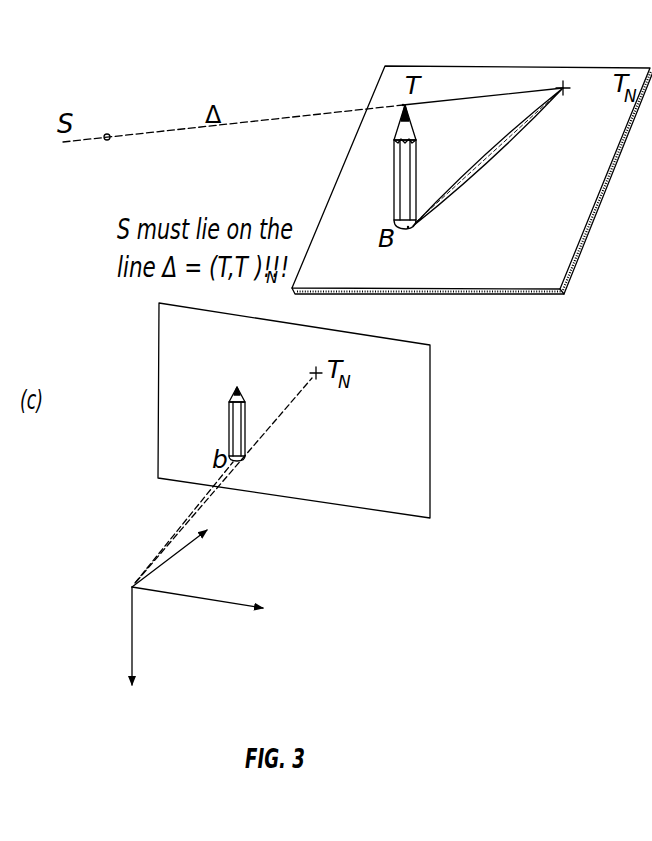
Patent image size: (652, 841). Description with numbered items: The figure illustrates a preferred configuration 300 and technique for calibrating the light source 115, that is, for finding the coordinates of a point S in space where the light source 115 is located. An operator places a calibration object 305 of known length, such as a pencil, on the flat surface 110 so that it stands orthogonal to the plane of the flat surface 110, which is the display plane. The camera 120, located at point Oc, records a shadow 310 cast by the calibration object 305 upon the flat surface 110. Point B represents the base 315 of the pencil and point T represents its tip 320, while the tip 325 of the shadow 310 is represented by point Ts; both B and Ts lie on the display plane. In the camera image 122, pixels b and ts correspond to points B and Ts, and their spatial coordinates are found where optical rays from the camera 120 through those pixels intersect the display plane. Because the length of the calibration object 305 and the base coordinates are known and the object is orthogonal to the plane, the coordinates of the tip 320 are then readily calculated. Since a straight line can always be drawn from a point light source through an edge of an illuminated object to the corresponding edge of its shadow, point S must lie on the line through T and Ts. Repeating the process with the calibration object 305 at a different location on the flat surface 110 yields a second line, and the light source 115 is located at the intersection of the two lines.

The configuration 300 is at (150, 48).
The flat surface 110 is at (488, 293).
The light source 115 is at (105, 141).
The camera 120 is at (128, 590).
The camera image 122 is at (327, 410).
The calibration object 305 is at (394, 174).
The shadow 310 is at (490, 157).
The base 315 is at (439, 242).
The tip 320 is at (363, 87).
The tip of shadow 325 is at (581, 105).